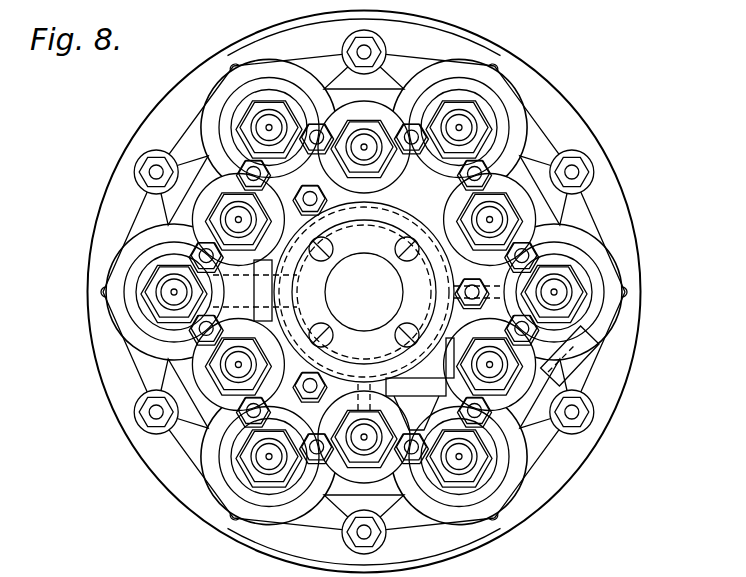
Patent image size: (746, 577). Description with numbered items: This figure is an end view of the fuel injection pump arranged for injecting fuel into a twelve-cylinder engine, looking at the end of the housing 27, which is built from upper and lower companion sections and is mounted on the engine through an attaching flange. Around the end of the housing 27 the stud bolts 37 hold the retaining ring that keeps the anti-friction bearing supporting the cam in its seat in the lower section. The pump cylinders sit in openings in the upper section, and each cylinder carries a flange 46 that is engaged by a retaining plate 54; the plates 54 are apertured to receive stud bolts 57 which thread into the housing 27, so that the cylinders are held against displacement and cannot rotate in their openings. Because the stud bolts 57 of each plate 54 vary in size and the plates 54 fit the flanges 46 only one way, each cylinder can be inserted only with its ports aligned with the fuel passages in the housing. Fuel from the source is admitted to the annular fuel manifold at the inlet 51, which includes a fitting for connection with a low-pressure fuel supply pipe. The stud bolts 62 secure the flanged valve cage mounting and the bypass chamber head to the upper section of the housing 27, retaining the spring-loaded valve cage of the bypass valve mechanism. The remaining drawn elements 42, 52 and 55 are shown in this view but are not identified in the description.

The housing 27 is at (655, 322).
The stud bolts 37 is at (255, 304).
The cylinder head nut 42 is at (476, 208).
The flanges 46 is at (590, 269).
The fuel inlet fitting 51 is at (578, 367).
The nut 52 is at (308, 183).
The retaining plates 54 is at (532, 236).
The bolt 55 is at (372, 533).
The stud bolts 57 is at (490, 167).
The stud bolts 62 is at (255, 286).